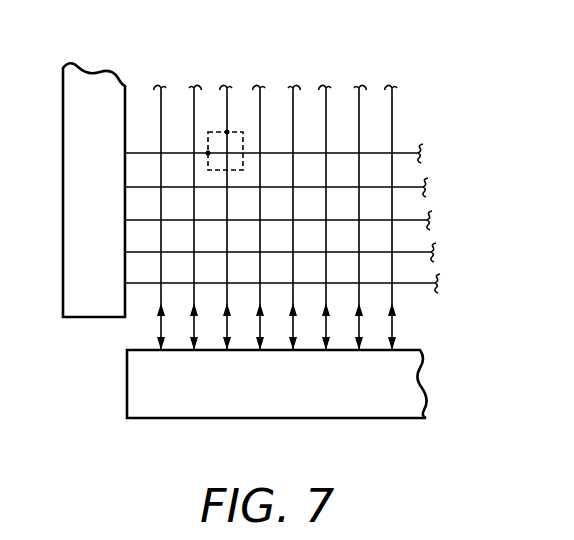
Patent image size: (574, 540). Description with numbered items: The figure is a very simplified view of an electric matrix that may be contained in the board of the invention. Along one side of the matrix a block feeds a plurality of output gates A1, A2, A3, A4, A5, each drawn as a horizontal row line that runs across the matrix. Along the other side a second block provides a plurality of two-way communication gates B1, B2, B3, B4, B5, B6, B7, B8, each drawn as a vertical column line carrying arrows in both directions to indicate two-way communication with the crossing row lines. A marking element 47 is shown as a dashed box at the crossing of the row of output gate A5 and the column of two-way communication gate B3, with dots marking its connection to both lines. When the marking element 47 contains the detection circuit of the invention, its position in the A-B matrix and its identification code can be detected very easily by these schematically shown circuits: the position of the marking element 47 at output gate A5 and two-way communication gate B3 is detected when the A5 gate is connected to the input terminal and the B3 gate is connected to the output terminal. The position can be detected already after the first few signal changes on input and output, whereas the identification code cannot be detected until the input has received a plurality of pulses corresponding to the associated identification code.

The marking element 47 is at (236, 125).
The output gate A1 is at (258, 283).
The output gate A2 is at (256, 252).
The output gate A3 is at (254, 220).
The output gate A4 is at (252, 187).
The output gate A5 is at (250, 153).
The two-way communication gate B1 is at (161, 234).
The two-way communication gate B2 is at (196, 234).
The two-way communication gate B3 is at (228, 234).
The two-way communication gate B4 is at (261, 234).
The two-way communication gate B5 is at (296, 234).
The two-way communication gate B6 is at (326, 234).
The two-way communication gate B7 is at (361, 234).
The two-way communication gate B8 is at (391, 234).